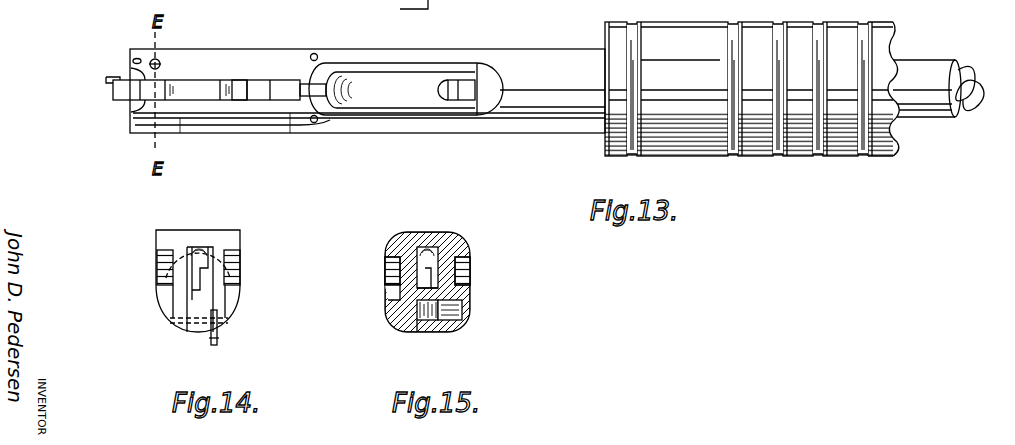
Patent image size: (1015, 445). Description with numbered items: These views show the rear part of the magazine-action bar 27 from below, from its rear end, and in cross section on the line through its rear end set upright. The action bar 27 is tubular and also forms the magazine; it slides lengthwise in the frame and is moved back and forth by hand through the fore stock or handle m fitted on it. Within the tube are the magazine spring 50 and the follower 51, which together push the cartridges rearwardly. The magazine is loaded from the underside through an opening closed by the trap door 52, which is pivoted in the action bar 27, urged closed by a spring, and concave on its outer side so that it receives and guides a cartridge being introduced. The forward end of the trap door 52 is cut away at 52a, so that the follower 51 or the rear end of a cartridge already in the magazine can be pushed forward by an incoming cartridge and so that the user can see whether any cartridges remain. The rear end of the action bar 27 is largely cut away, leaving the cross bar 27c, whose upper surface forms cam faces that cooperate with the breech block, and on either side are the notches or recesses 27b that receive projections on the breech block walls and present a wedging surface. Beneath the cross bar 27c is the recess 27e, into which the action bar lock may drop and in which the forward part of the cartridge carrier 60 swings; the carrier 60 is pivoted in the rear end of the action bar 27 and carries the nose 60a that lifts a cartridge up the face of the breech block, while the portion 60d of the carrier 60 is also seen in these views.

In FIG. 13, the action bar 27 is at (540, 70).
In FIG. 14, the action bar 27 is at (222, 298).
In FIG. 15, the action bar 27 is at (465, 246).
In FIG. 14, the notches or recesses 27b is at (160, 264).
In FIG. 15, the notches or recesses 27b is at (398, 262).
In FIG. 14, the cross bar 27c is at (222, 240).
In FIG. 14, the recess 27e is at (200, 247).
In FIG. 15, the recess 27e is at (422, 248).
In FIG. 13, the spring 50 is at (977, 76).
In FIG. 13, the follower 51 is at (462, 88).
In FIG. 13, the trap door 52 is at (406, 89).
In FIG. 13, the cut-away 52a is at (449, 101).
In FIG. 13, the cartridge carrier 60 is at (125, 91).
In FIG. 14, the cartridge carrier 60 is at (196, 318).
In FIG. 15, the cartridge carrier 60 is at (440, 322).
In FIG. 13, the nose 60a is at (243, 82).
In FIG. 15, the rod foot 60d is at (420, 330).
In FIG. 13, the fore stock or handle m is at (686, 40).